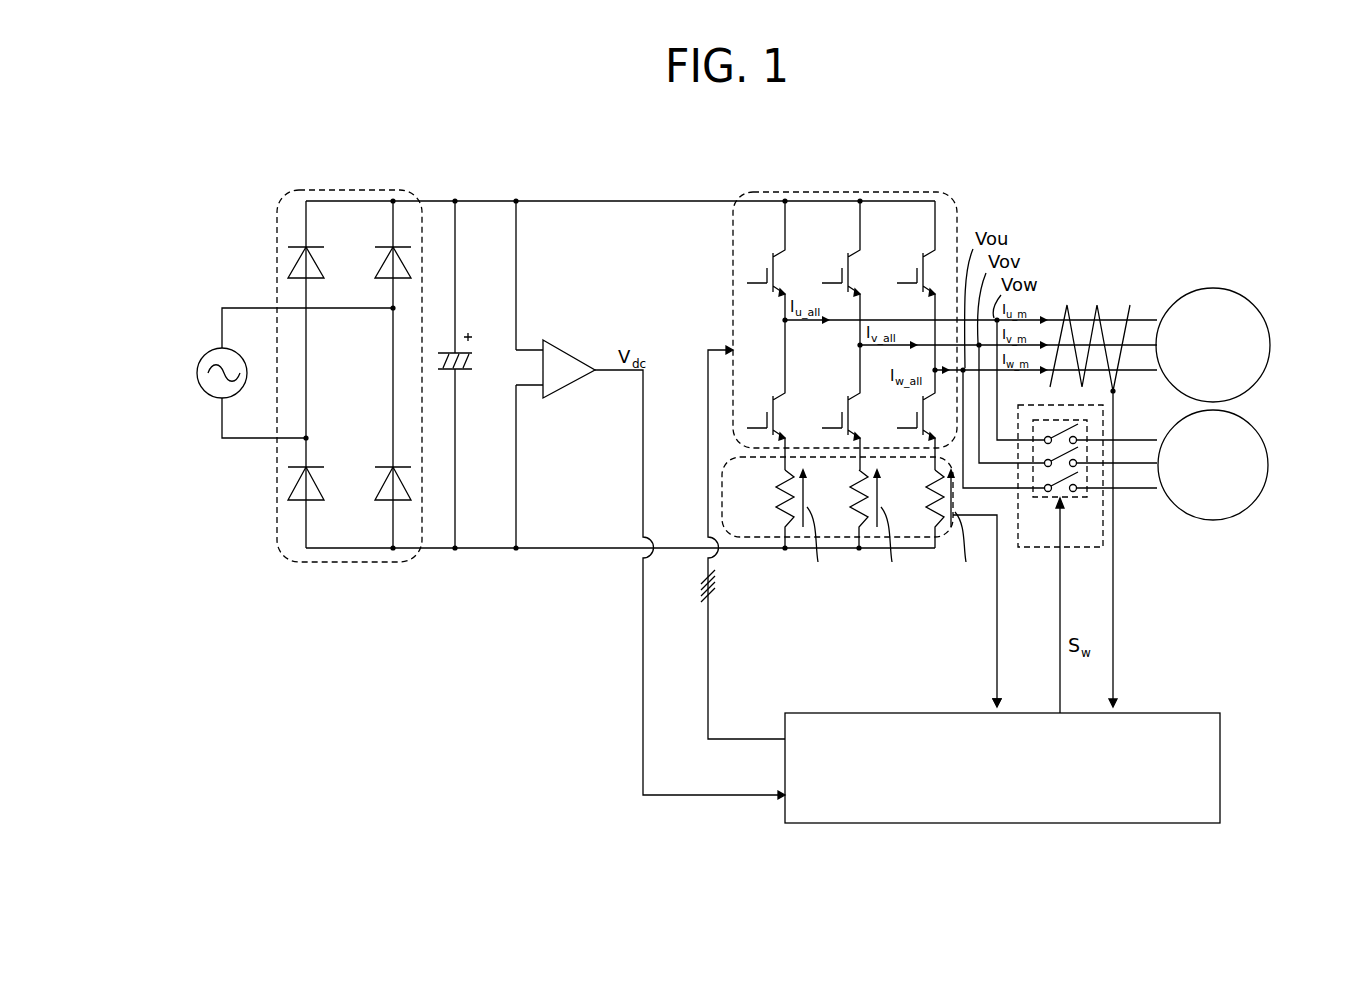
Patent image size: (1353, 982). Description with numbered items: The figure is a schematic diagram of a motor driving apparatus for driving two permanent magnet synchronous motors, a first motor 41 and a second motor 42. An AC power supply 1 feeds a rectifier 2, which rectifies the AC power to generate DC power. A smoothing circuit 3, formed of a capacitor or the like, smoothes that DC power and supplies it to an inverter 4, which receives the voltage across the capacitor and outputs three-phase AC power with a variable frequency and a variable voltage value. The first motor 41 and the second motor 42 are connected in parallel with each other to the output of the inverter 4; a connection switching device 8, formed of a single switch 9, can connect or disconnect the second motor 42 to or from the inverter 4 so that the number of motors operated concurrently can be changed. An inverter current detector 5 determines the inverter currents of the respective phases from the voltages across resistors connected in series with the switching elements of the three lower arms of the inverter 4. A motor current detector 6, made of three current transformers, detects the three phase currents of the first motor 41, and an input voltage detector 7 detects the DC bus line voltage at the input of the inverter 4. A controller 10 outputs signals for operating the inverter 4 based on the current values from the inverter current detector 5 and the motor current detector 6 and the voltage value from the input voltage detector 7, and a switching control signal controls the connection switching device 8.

The AC power supply 1 is at (218, 398).
The rectifier 2 is at (418, 190).
The smoothing circuit 3 is at (468, 372).
The inverter 4 is at (958, 210).
The inverter current detector 5 is at (798, 549).
The motor current detector 6 is at (1097, 300).
The input voltage detector 7 is at (578, 355).
The connection switching device 8 is at (1060, 465).
The switch 9 is at (1042, 498).
The controller 10 is at (898, 712).
The first motor 41 is at (1211, 288).
The second motor 42 is at (1210, 521).